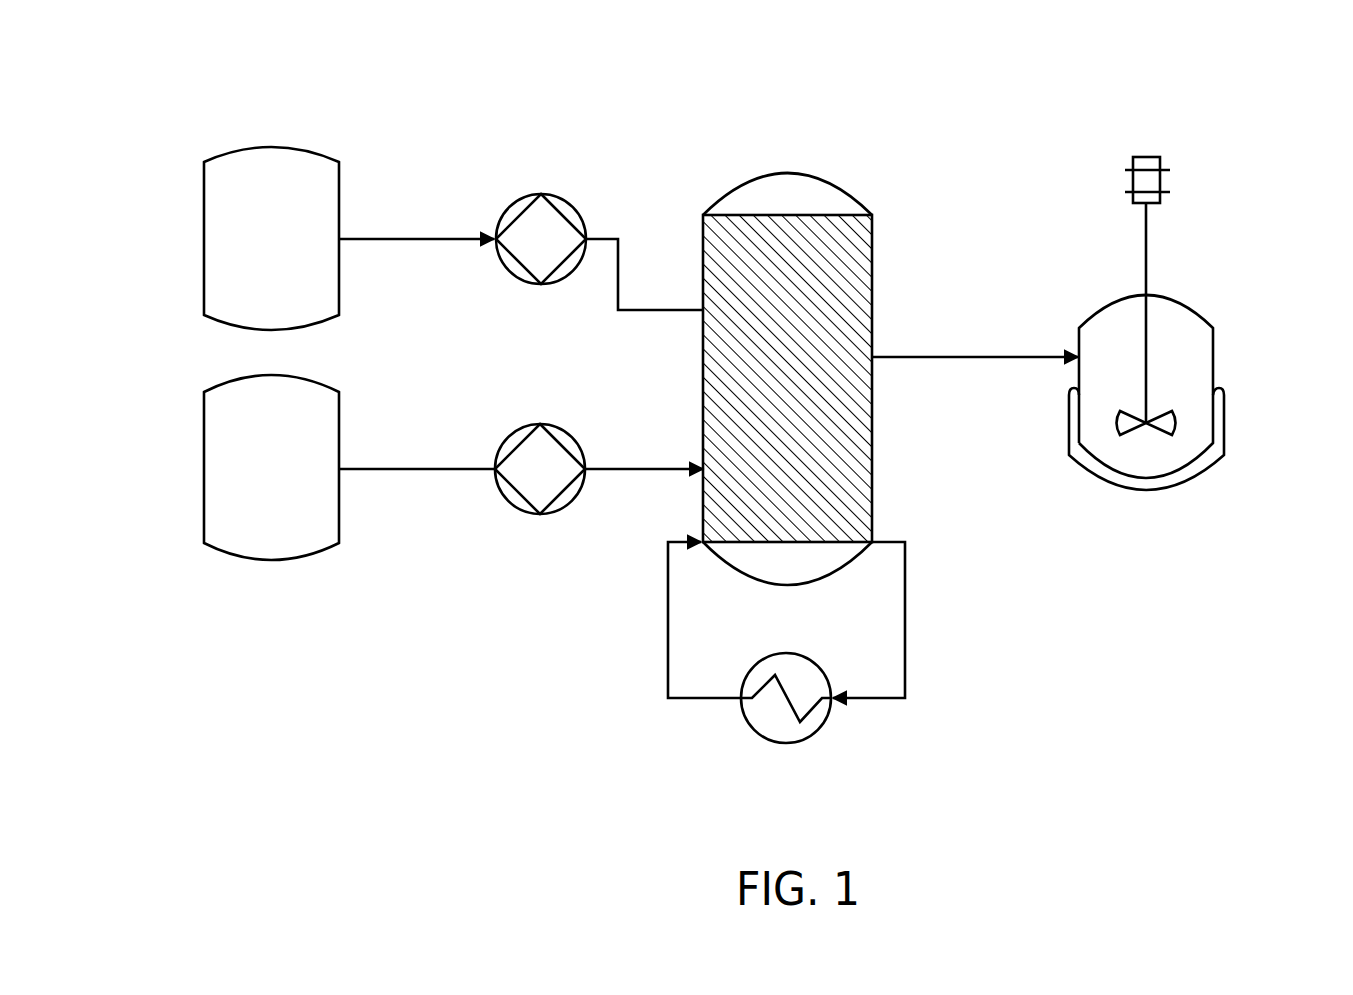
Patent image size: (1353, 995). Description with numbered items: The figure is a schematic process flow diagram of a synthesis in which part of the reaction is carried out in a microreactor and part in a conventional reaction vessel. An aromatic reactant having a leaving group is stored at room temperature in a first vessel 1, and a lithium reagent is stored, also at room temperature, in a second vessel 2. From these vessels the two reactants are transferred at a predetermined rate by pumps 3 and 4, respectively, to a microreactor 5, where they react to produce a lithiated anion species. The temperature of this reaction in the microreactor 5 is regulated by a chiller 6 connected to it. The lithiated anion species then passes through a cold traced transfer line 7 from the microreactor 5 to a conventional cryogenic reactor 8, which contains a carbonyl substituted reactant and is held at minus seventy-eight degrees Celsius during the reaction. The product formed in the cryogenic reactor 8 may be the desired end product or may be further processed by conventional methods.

The first vessel 1 is at (255, 188).
The second vessel 2 is at (270, 493).
The pump 3 is at (540, 192).
The pump 4 is at (537, 497).
The microreactor 5 is at (778, 192).
The chiller 6 is at (748, 723).
The cold traced transfer line 7 is at (927, 358).
The conventional cryogenic reactor 8 is at (1182, 377).